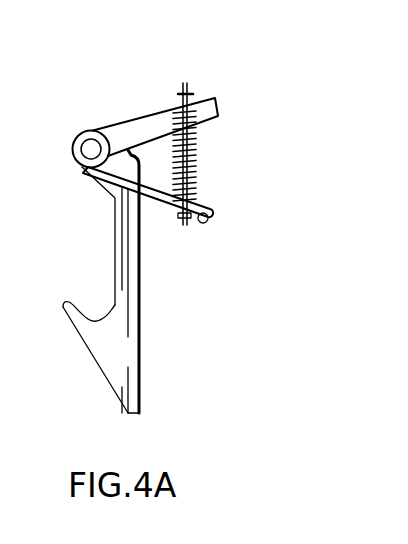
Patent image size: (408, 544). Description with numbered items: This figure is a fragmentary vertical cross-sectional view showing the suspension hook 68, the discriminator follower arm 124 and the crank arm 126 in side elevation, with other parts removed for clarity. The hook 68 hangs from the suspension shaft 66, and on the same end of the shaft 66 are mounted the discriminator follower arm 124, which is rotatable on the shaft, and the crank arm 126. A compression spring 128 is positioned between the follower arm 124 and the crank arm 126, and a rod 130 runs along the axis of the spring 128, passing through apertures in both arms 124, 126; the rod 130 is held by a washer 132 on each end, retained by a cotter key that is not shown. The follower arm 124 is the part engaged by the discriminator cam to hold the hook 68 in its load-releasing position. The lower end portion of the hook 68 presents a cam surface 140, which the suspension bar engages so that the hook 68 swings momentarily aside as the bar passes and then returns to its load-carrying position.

The suspension shaft 66 is at (73, 144).
The suspension hook 68 is at (115, 251).
The discriminator follower arm 124 is at (213, 208).
The crank arm 126 is at (153, 113).
The compression spring 128 is at (192, 158).
The rod 130 is at (190, 83).
The washer 132 is at (192, 95).
The cam surface 140 is at (103, 372).